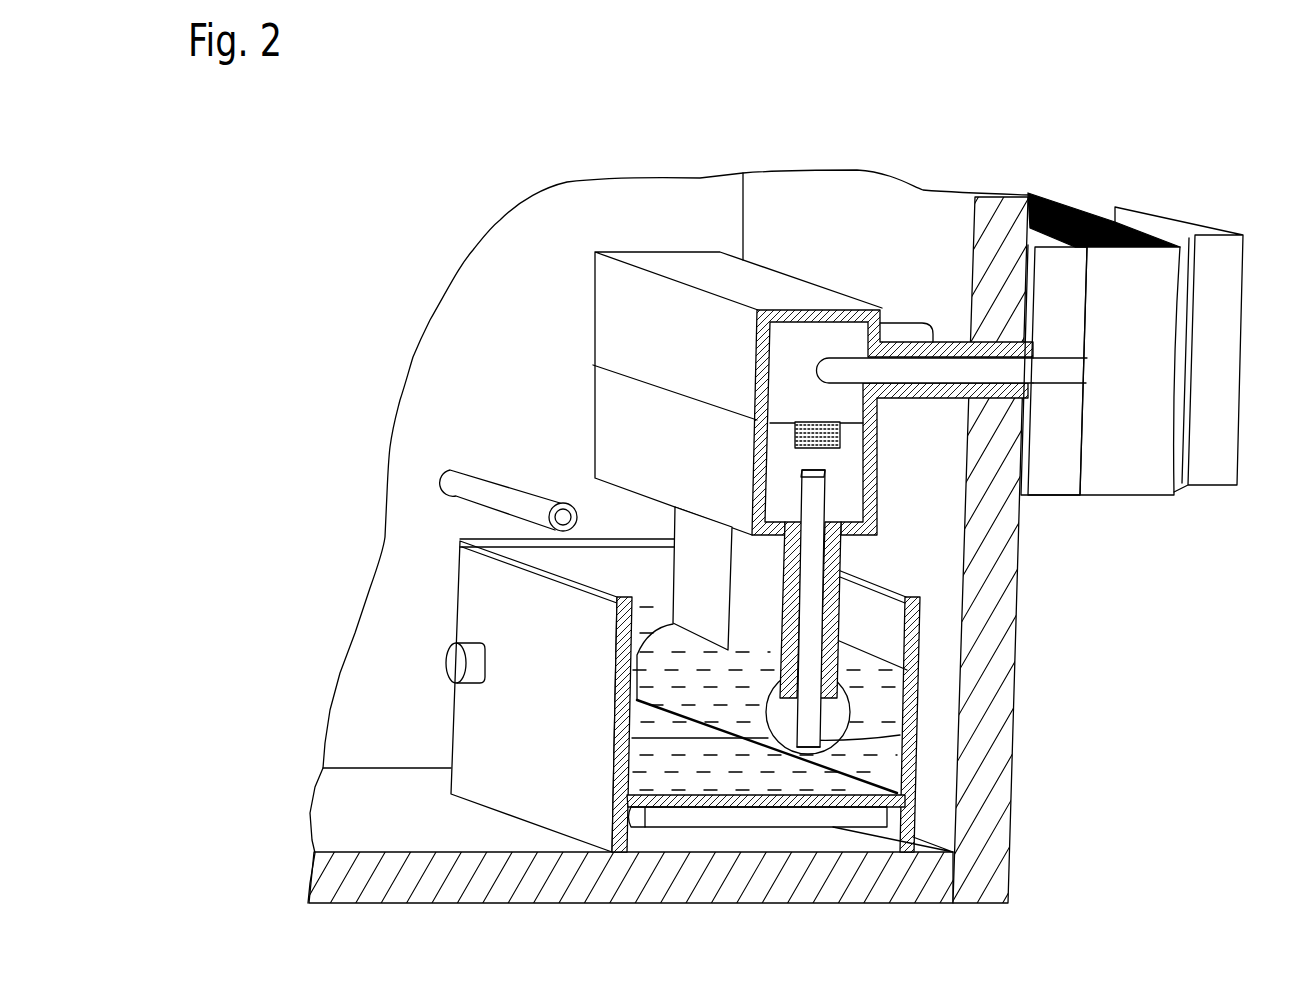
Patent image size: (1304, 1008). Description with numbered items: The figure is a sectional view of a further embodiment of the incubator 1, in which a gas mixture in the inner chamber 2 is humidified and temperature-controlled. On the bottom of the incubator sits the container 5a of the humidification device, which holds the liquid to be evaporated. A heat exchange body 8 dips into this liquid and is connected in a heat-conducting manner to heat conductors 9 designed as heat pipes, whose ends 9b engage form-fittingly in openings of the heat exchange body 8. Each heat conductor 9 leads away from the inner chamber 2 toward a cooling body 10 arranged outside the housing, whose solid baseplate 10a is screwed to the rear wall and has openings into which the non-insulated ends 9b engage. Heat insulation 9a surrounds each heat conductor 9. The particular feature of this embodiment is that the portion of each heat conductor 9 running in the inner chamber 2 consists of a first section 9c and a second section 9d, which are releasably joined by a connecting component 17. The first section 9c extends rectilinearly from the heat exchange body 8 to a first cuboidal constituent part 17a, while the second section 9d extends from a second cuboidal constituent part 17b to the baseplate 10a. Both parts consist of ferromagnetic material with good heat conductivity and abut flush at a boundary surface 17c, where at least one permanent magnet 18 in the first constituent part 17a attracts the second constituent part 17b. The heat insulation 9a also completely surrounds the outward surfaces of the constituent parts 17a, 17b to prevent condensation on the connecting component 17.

The incubator 1 is at (376, 282).
The inner chamber 2 is at (500, 379).
The container 5a is at (483, 729).
The heat exchange body 8 is at (835, 708).
The heat conductor 9 is at (888, 564).
The heat insulation 9a is at (826, 310).
The end of heat conductor 9b is at (1067, 372).
The first section 9c is at (812, 640).
The second section 9d is at (957, 370).
The cooling body 10 is at (1082, 193).
The baseplate 10a is at (1053, 475).
The connecting component 17 is at (702, 262).
The first constituent part 17a is at (788, 492).
The second constituent part 17b is at (792, 345).
The boundary surface 17c is at (785, 420).
The permanent magnet 18 is at (797, 438).